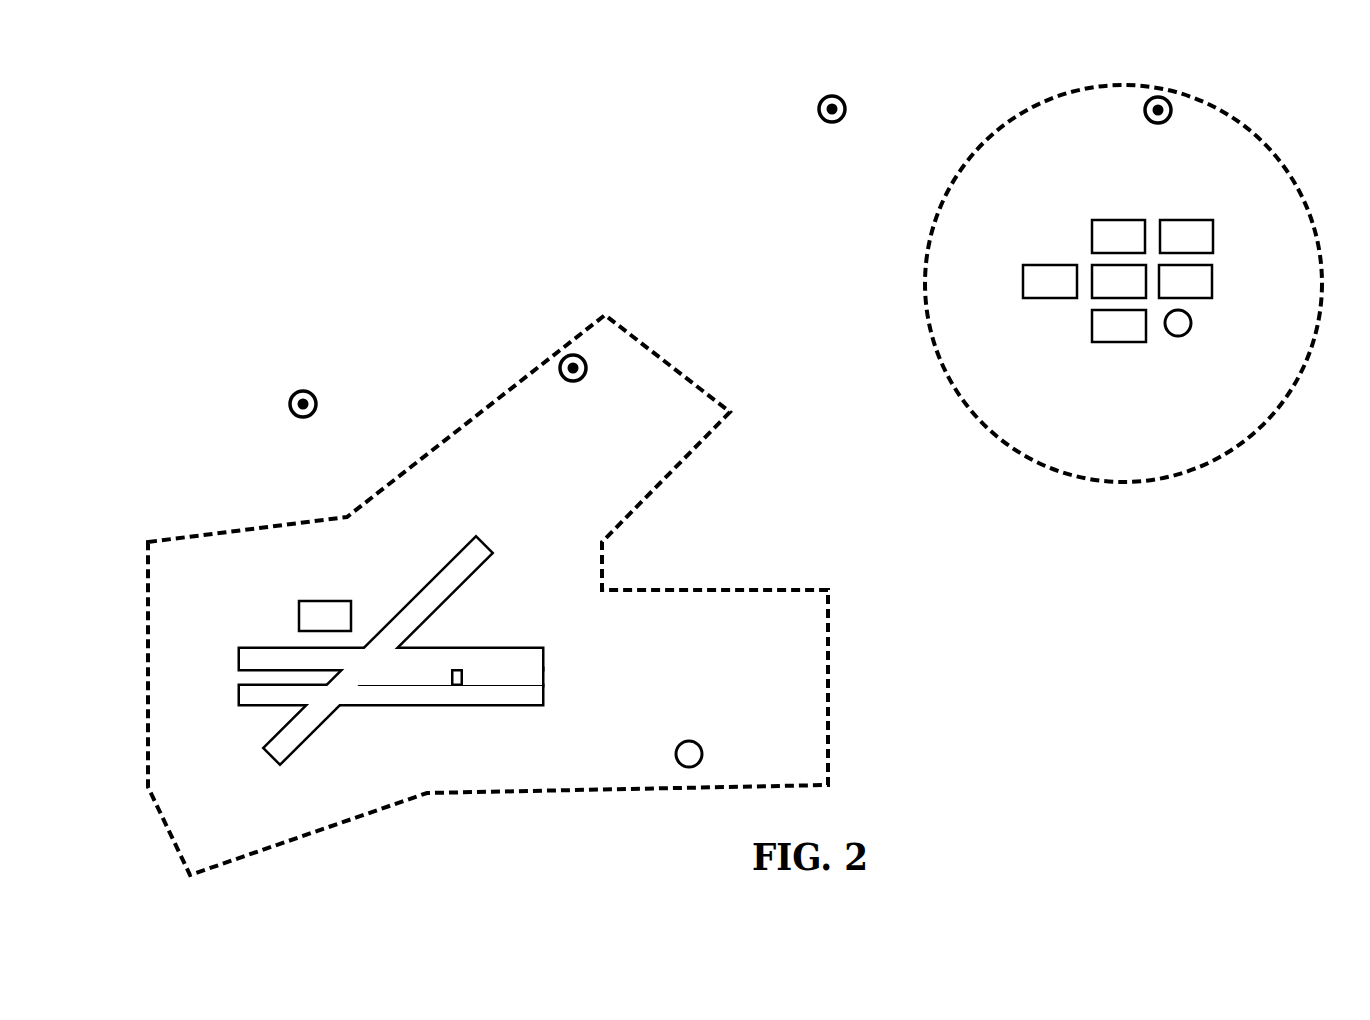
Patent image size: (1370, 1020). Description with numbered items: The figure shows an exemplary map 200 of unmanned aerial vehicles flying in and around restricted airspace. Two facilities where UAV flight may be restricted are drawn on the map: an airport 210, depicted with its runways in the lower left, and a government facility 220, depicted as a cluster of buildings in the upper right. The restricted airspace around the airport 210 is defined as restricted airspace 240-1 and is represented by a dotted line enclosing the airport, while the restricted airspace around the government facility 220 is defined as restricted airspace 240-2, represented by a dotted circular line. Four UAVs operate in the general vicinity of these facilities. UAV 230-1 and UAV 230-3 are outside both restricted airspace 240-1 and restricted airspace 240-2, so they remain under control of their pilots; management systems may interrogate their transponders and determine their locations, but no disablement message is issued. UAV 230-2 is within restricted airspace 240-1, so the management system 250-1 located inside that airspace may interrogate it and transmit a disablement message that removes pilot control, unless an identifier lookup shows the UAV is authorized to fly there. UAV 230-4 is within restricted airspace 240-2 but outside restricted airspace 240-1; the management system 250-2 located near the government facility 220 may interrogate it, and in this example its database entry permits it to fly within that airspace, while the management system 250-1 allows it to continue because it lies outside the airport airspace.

The map 200 is at (361, 162).
The airport 210 is at (231, 616).
The government facility 220 is at (1049, 216).
The UAV 230-1 is at (292, 396).
The UAV 230-2 is at (562, 360).
The UAV 230-3 is at (820, 101).
The UAV 230-4 is at (1147, 101).
The restricted airspace 240-1 is at (443, 437).
The restricted airspace 240-2 is at (1015, 115).
The management system 250-1 is at (681, 741).
The management system 250-2 is at (1183, 337).